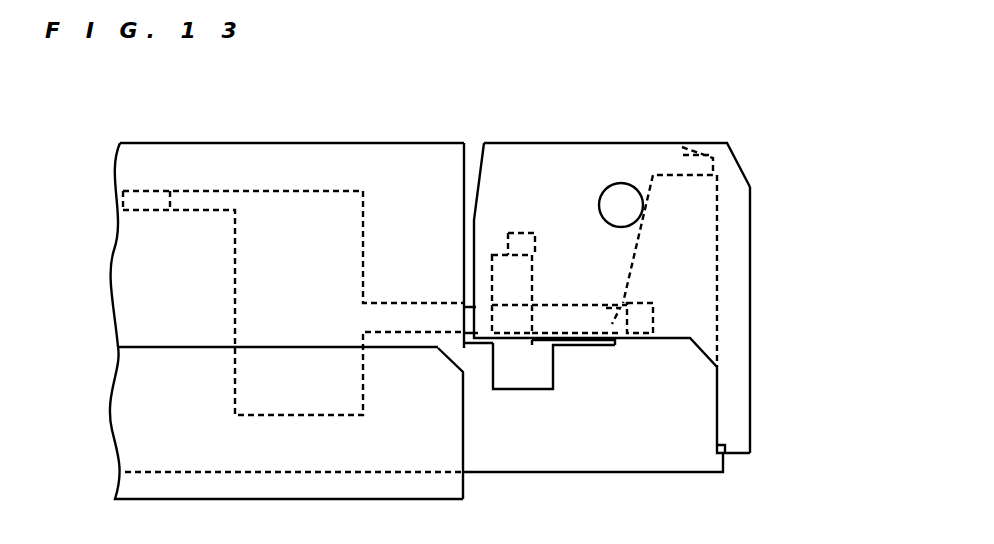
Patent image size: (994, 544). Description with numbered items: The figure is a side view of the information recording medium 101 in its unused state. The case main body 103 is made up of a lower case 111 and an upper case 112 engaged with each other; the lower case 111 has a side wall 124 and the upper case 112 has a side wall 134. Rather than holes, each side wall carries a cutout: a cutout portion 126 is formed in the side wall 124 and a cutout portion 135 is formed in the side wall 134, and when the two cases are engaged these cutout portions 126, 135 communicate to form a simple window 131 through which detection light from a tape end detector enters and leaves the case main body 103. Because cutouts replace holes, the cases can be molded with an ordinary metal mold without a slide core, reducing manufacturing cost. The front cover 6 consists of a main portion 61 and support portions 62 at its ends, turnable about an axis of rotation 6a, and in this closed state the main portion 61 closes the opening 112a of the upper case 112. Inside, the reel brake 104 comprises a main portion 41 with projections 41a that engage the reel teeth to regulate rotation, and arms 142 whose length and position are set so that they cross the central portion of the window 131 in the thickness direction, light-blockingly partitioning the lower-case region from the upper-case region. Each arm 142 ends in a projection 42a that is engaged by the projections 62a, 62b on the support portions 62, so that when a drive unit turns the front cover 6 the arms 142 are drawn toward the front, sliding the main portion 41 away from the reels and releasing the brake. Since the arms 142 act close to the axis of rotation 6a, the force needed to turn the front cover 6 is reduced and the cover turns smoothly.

The information recording medium 101 is at (355, 95).
The reel brake 104 is at (379, 180).
The side wall 134 is at (473, 153).
The support portion 62 is at (603, 158).
The axis of rotation 6a is at (622, 195).
The projection 41a is at (151, 204).
The main portion 41 is at (292, 204).
The arm 142 is at (430, 317).
The projection 62a is at (520, 232).
The cutout portion 135 is at (515, 282).
The projection 42a is at (612, 305).
The projection 62b is at (641, 302).
The main portion 61 is at (743, 229).
The opening 112a is at (702, 256).
The front cover 6 is at (762, 312).
The upper case 112 is at (140, 285).
The case main body 103 is at (106, 345).
The lower case 111 is at (140, 408).
The window 131 is at (535, 361).
The cutout portion 126 is at (507, 367).
The side wall 124 is at (582, 450).